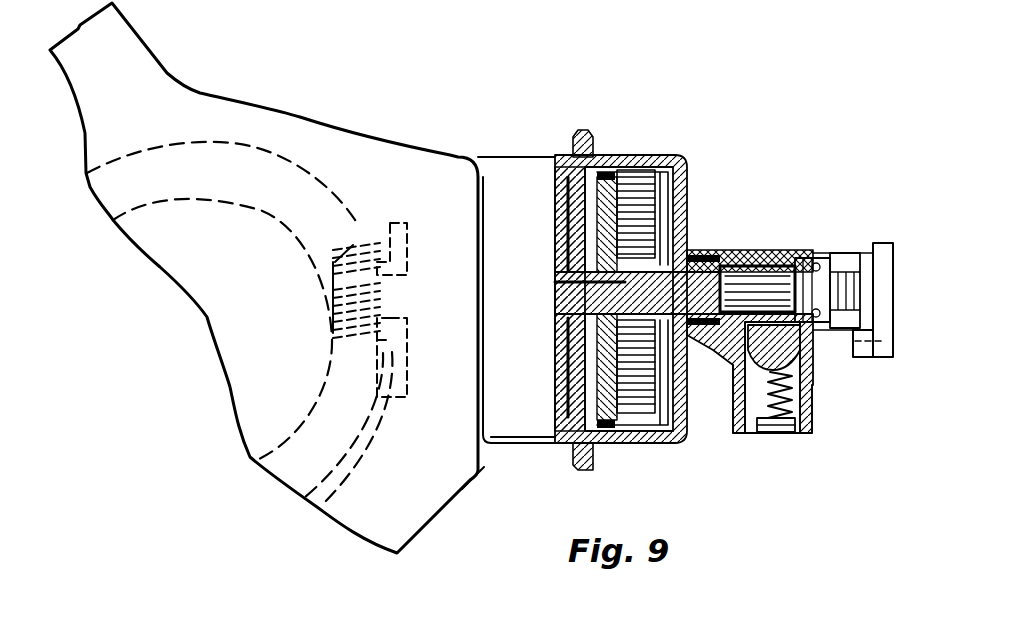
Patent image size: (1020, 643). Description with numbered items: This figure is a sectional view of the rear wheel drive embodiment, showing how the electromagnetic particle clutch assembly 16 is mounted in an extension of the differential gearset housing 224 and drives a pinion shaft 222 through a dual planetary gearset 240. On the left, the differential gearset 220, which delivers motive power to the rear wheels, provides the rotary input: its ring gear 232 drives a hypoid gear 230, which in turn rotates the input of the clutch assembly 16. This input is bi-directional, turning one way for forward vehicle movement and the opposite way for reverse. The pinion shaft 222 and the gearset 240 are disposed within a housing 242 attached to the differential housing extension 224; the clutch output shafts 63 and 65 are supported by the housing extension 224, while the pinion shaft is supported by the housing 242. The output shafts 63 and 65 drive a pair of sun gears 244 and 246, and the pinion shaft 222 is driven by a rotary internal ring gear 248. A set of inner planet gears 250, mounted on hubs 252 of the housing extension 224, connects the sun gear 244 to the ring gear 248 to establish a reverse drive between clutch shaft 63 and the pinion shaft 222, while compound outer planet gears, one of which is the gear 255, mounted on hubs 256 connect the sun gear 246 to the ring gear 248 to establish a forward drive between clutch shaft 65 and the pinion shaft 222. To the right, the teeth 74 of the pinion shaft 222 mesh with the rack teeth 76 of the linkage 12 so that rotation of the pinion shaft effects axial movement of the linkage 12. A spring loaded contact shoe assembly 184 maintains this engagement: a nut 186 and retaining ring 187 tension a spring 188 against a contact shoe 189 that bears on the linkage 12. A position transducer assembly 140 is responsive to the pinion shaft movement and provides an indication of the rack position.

The differential gearset 220 is at (262, 123).
The ring gear 232 is at (293, 197).
The hypoid gear 230 is at (352, 242).
The electromagnetic particle clutch assembly 16 is at (523, 145).
The differential gearset housing extension 224 is at (517, 422).
The housing 242 is at (682, 190).
The rotary internal (ring) gear 248 is at (652, 155).
The hubs 252 is at (592, 200).
The sun gear 244 is at (597, 343).
The dual planetary gearset 240 is at (632, 132).
The inner planet gears 250 is at (620, 177).
The hubs 256 is at (620, 388).
The compound outer planet gear 255 is at (637, 423).
The clutch output shaft 63 is at (562, 286).
The clutch output shaft 65 is at (573, 297).
The sun gear 246 is at (683, 252).
The linkage 12 is at (816, 332).
The pinion shaft 222 is at (748, 262).
The teeth 74 is at (775, 268).
The rack teeth 76 is at (815, 262).
The position transducer assembly 140 is at (880, 230).
The contact shoe 189 is at (740, 375).
The spring 188 is at (760, 425).
The nut 186 is at (775, 433).
The retaining ring 187 is at (807, 413).
The contact shoe assembly 184 is at (844, 426).